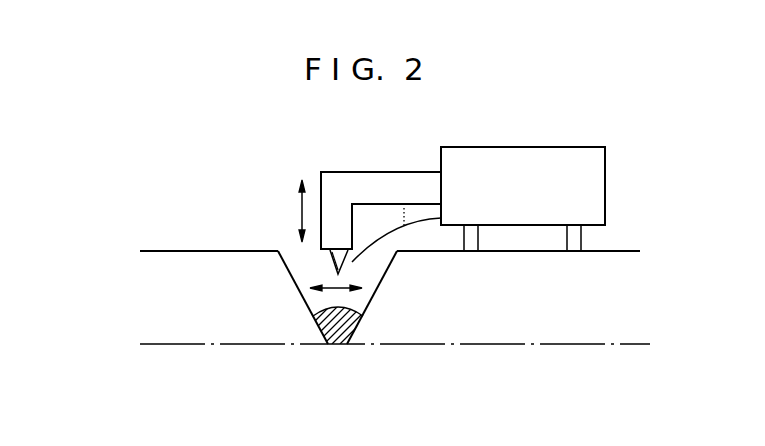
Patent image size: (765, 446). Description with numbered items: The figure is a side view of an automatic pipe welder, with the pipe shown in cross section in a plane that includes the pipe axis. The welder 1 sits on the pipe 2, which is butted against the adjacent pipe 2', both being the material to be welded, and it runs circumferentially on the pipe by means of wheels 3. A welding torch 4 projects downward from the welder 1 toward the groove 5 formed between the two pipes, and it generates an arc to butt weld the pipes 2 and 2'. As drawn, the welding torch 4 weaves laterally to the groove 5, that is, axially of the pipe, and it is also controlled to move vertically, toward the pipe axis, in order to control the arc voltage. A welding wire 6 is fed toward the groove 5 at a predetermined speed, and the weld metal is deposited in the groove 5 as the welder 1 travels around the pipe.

The welder 1 is at (512, 152).
The pipe 2 is at (518, 229).
The pipe 2' is at (209, 234).
The wheels 3 is at (470, 247).
The welding torch 4 is at (322, 244).
The groove 5 is at (323, 305).
The welding wire 6 is at (397, 234).